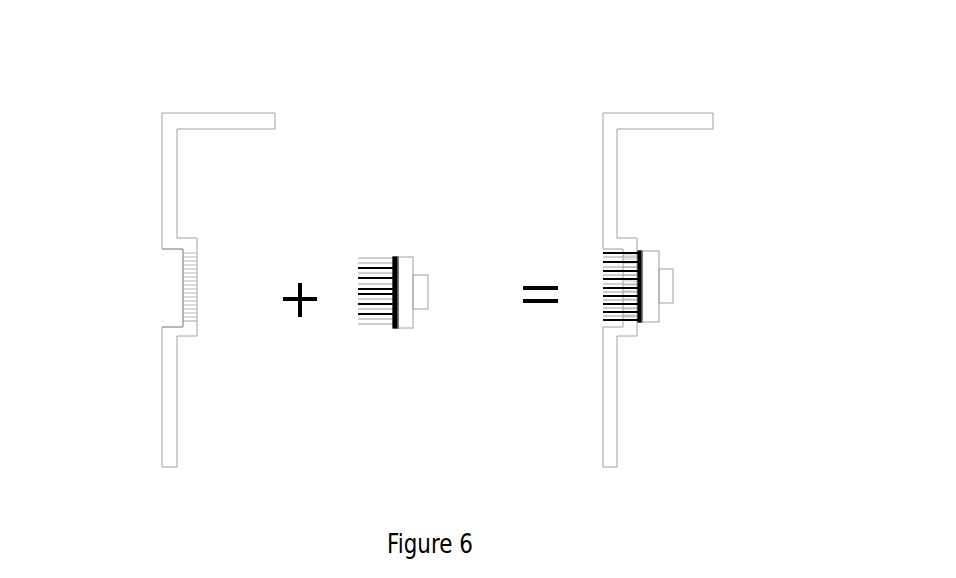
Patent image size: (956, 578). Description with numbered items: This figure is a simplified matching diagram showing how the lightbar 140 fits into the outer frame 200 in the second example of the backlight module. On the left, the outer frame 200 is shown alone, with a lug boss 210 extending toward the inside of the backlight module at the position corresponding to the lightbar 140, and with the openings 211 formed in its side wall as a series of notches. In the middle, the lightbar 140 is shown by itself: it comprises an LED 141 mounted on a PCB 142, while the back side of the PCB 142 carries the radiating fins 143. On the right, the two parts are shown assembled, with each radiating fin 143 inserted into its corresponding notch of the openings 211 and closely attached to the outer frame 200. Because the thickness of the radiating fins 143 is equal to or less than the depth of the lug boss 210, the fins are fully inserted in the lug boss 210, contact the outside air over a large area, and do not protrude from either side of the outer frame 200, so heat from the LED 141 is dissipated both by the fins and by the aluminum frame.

The outer frame 200 is at (176, 141).
The lug boss 210 is at (152, 300).
The opening 211 is at (190, 267).
The lightbar 140 is at (584, 275).
The LED 141 is at (418, 296).
The PCB 142 is at (406, 274).
The radiating fin 143 is at (372, 281).